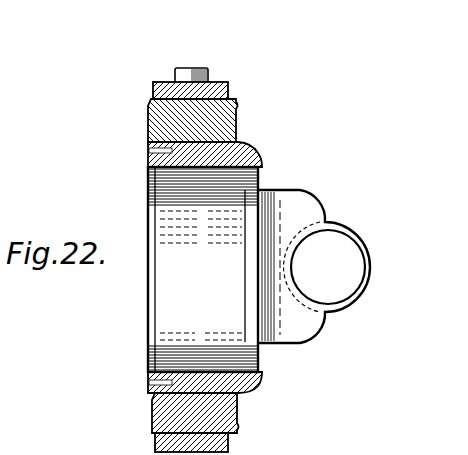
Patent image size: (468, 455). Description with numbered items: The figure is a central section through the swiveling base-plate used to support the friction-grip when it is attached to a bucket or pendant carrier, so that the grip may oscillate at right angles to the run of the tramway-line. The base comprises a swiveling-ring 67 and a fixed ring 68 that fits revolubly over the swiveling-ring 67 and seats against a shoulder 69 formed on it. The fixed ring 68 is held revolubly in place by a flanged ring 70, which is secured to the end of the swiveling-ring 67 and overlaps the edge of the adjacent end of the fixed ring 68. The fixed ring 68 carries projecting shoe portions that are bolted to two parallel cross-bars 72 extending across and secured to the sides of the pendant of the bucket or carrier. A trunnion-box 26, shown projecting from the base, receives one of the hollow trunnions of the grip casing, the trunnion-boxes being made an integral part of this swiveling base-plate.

The trunnion-box 26 is at (374, 267).
The swiveling-ring 67 is at (200, 269).
The fixed ring 68 is at (202, 123).
The shoulder 69 is at (248, 141).
The flanged ring 70 is at (148, 190).
The cross-bars 72 is at (228, 88).